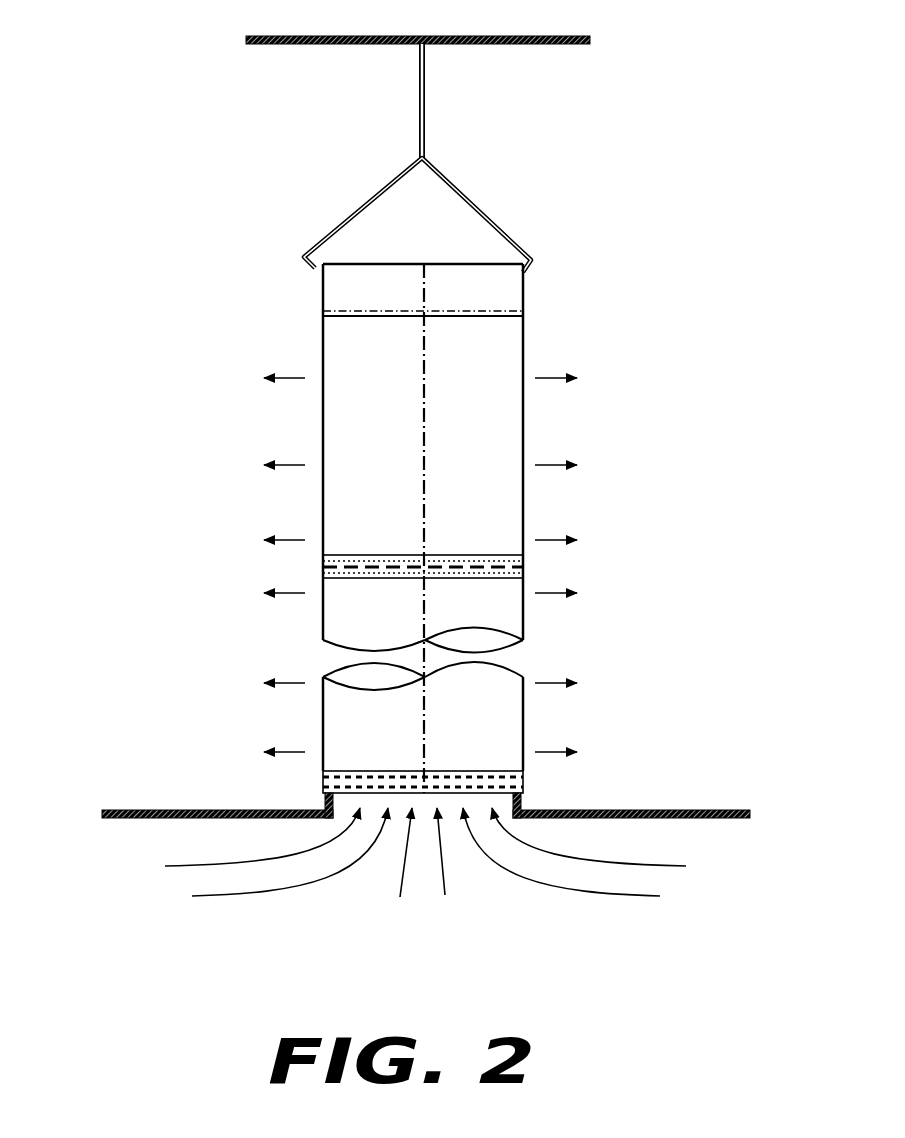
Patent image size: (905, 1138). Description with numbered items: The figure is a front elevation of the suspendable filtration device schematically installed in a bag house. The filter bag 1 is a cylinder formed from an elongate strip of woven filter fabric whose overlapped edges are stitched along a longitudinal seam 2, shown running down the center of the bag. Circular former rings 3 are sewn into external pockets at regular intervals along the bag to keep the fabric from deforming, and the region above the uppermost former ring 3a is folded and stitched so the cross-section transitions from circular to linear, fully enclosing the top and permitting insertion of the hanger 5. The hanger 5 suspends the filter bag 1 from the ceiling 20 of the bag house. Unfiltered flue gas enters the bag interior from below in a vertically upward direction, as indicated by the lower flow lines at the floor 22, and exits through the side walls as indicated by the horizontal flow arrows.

The ceiling 20 is at (295, 48).
The hanger 5 is at (516, 238).
The filter bag 1 is at (323, 358).
The longitudinal seam 2 is at (427, 385).
The uppermost former ring 3a is at (323, 556).
The circular former ring 3 is at (323, 782).
The floor plates 22 is at (130, 822).